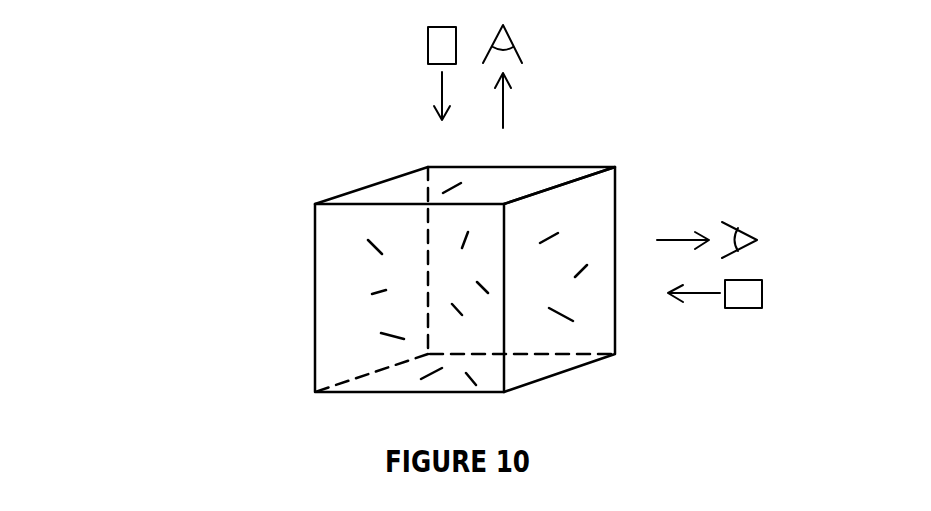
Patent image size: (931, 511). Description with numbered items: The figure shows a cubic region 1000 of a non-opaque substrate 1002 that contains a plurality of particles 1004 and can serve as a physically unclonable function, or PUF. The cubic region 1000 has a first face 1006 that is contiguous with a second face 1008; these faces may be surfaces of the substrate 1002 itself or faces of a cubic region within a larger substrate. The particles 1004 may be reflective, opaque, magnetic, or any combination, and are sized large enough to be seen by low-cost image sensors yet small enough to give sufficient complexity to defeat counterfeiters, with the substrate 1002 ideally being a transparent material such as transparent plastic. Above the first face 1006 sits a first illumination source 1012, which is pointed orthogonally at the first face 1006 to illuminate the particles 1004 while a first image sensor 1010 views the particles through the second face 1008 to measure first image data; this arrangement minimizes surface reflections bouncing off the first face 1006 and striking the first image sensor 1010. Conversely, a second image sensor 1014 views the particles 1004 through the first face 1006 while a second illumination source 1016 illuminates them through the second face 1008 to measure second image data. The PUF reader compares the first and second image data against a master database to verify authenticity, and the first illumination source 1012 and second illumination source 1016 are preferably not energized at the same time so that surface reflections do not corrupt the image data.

The cubic region 1000 is at (200, 124).
The non-opaque substrate 1002 is at (315, 331).
The particles 1004 is at (373, 248).
The first face 1006 is at (405, 172).
The second face 1008 is at (611, 222).
The first image sensor 1010 is at (747, 227).
The first illumination source 1012 is at (428, 45).
The second image sensor 1014 is at (510, 38).
The second illumination source 1016 is at (762, 290).